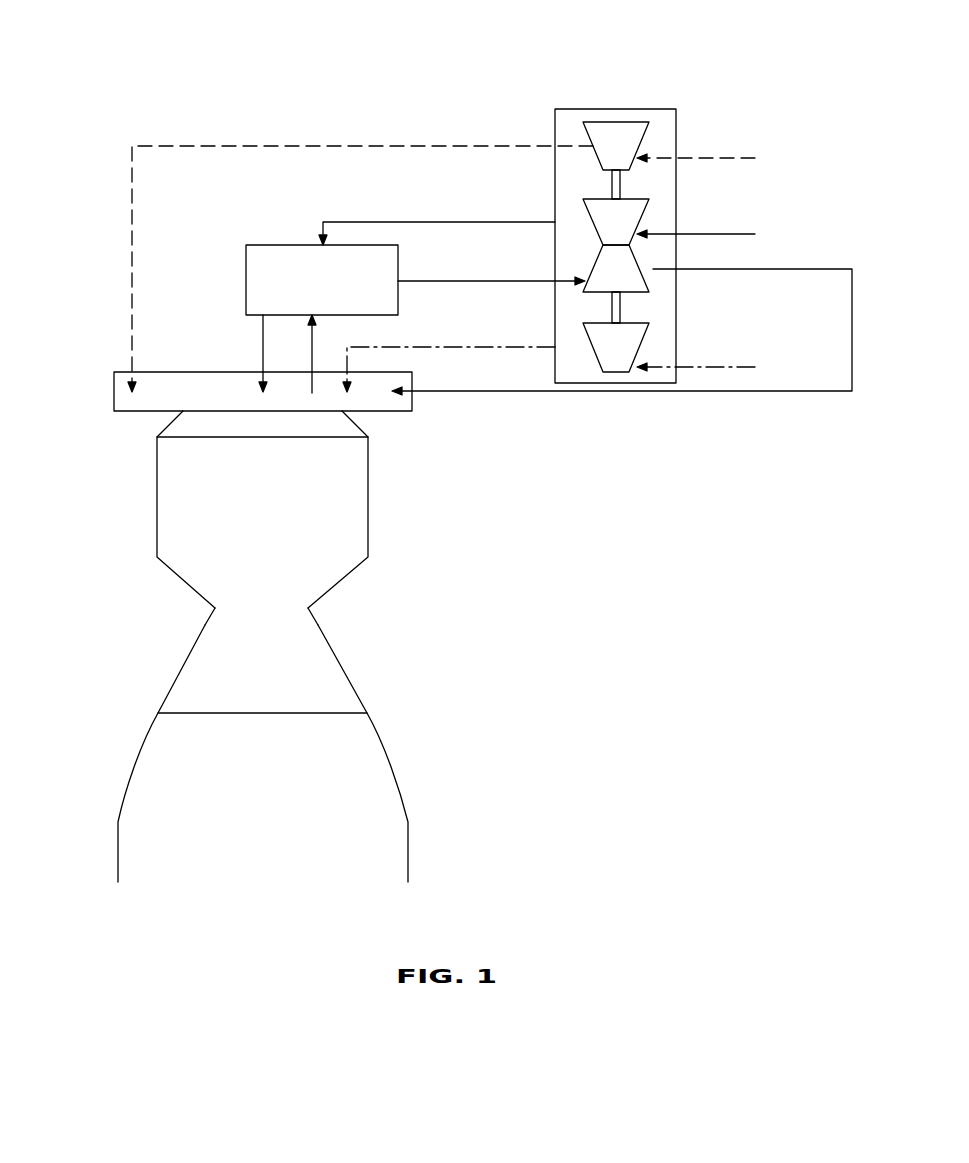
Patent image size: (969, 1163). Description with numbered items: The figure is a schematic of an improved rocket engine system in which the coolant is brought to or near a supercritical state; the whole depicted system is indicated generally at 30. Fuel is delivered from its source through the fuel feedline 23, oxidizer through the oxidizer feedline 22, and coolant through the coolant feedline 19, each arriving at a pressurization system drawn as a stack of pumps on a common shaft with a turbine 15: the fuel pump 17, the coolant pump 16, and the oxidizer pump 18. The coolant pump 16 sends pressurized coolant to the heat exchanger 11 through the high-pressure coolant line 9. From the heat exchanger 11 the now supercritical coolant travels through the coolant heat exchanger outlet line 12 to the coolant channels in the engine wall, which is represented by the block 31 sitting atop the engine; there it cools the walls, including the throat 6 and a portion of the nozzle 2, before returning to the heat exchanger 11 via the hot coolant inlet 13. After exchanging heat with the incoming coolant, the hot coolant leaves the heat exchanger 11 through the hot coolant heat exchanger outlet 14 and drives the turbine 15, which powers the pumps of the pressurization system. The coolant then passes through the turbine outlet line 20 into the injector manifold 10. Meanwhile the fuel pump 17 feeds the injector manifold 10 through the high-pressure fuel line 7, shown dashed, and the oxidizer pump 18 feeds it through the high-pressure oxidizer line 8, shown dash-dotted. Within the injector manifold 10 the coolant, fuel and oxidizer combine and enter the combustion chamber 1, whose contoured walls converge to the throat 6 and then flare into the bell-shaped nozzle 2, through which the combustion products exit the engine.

The combustion chamber 1 is at (157, 465).
The nozzle 2 is at (136, 746).
The throat 6 is at (222, 626).
The high-pressure fuel line 7 is at (214, 146).
The high-pressure oxidizer line 8 is at (428, 347).
The high-pressure coolant line 9 is at (362, 222).
The injector manifold 10 is at (360, 425).
The heat exchanger 11 is at (246, 280).
The coolant heat exchanger outlet line 12 is at (263, 330).
The hot coolant inlet 13 is at (312, 330).
The hot coolant heat exchanger outlet 14 is at (428, 281).
The turbine 15 is at (592, 258).
The coolant pump 16 is at (602, 240).
The fuel pump 17 is at (600, 160).
The oxidizer pump 18 is at (600, 366).
The coolant feedline 19 is at (718, 234).
The turbine outlet line 20 is at (813, 269).
The oxidizer feedline 22 is at (718, 367).
The fuel feedline 23 is at (718, 158).
The rocket engine 30 is at (155, 60).
The valve block 31 is at (114, 388).